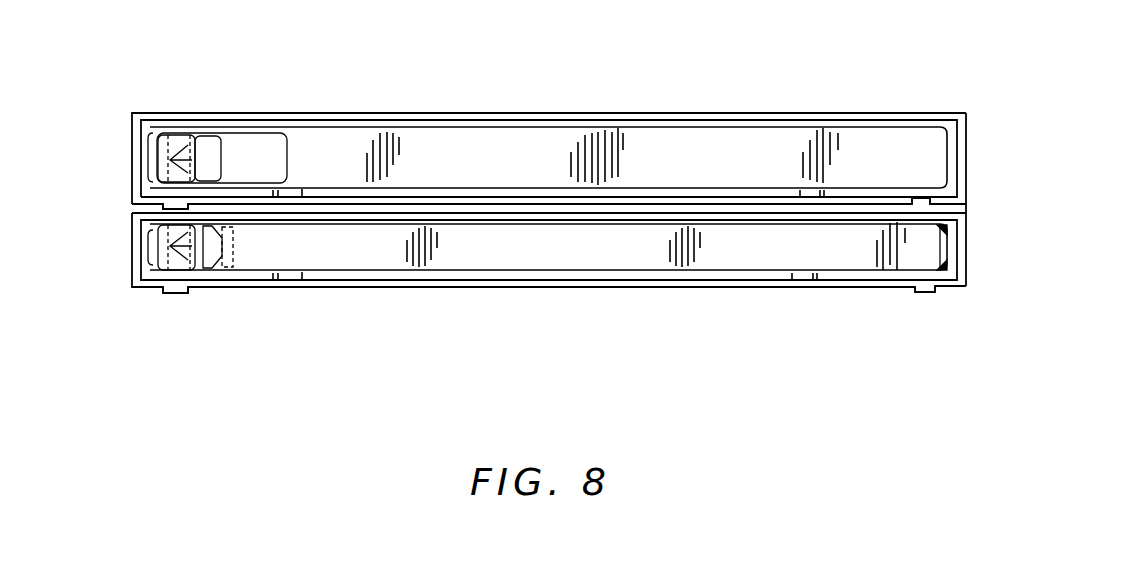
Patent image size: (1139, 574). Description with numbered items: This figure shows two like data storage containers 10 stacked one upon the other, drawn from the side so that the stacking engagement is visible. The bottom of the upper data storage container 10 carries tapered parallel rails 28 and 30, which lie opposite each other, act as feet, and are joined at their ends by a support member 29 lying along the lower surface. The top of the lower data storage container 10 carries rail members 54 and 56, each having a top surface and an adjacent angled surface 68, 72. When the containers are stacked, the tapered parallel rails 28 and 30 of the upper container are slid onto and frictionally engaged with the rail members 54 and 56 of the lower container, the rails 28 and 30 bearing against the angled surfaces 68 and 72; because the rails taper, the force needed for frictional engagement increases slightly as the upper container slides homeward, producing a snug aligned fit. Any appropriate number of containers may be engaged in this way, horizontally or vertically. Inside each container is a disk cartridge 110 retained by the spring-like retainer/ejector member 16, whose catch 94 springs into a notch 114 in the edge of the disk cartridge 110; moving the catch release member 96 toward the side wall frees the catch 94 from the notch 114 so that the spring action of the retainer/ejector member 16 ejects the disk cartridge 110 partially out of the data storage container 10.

The data storage container 10 is at (995, 137).
The retainer/ejector member 16 is at (291, 160).
The tapered parallel rail 28 is at (175, 203).
The support member 29 is at (410, 292).
The tapered parallel rail 30 is at (915, 196).
The rail member 54 is at (165, 209).
The rail member 56 is at (958, 207).
The angled surface 68 is at (162, 114).
The angled surface 72 is at (938, 113).
The catch 94 is at (224, 254).
The catch release member 96 is at (167, 231).
The disk cartridge 110 is at (570, 262).
The notch 114 is at (232, 234).